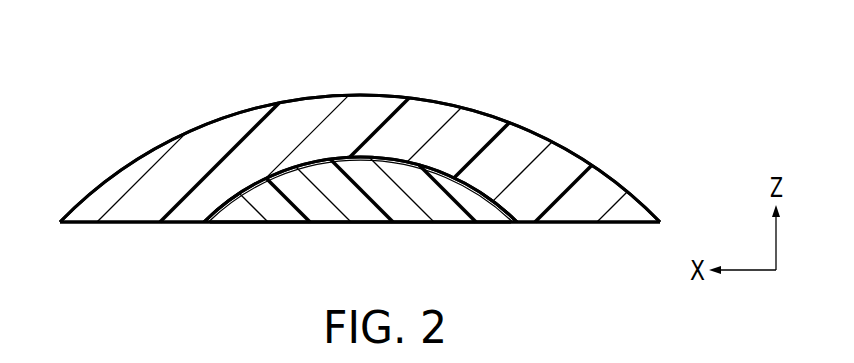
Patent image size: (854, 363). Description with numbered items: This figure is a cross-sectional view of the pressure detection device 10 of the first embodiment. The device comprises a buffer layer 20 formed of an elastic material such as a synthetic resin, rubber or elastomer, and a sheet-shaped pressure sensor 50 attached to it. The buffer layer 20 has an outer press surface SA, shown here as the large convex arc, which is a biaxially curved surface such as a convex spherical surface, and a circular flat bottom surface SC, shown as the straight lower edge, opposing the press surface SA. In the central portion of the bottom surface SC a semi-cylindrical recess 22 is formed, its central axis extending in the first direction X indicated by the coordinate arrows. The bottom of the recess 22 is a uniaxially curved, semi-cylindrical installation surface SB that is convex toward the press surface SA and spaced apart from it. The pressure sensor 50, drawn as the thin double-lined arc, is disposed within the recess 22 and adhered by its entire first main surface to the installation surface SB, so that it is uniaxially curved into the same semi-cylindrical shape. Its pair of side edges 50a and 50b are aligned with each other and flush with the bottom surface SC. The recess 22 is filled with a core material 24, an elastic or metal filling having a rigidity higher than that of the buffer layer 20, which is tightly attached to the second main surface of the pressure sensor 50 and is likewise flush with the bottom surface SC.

The pressure detection device 10 is at (154, 101).
The buffer layer 20 is at (527, 139).
The recess 22 is at (263, 190).
The core material 24 is at (358, 212).
The pressure sensor 50 is at (466, 194).
The side edge 50a is at (210, 223).
The side edge 50b is at (513, 223).
The press surface SA is at (288, 101).
The installation surface SB is at (396, 162).
The bottom surface SC is at (125, 223).